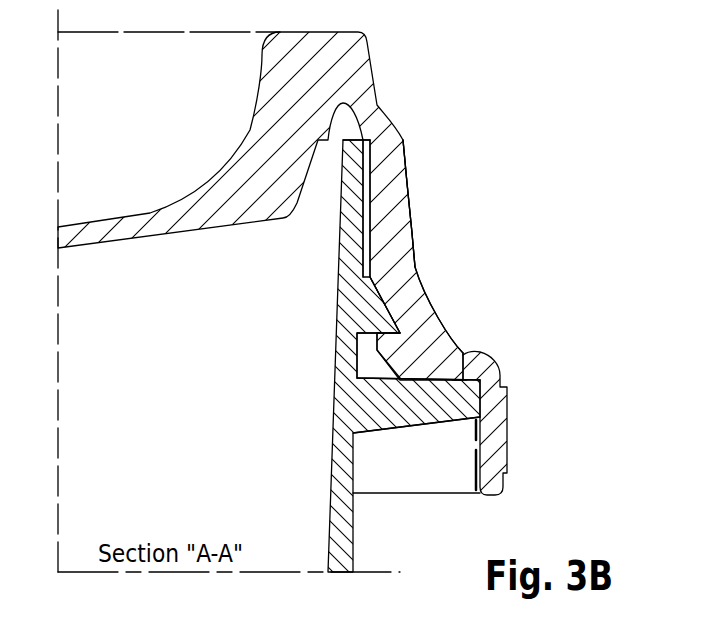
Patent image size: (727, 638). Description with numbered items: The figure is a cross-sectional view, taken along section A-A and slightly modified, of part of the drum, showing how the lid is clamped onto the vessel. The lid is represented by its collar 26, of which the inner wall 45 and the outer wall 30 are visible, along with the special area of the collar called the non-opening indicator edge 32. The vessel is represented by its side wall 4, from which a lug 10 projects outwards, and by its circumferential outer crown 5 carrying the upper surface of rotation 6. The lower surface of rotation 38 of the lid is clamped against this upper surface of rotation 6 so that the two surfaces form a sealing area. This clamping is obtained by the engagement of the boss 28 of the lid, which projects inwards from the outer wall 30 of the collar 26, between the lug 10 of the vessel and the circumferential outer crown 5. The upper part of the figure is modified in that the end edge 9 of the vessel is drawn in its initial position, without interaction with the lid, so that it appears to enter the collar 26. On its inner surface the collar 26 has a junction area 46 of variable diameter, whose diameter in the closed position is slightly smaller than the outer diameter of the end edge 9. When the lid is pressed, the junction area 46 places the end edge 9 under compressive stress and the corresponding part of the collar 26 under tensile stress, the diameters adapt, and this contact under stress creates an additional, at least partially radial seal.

The side wall 4 is at (340, 545).
The circumferential outer crown 5 is at (398, 418).
The upper surface of rotation 6 is at (440, 364).
The end edge 9 is at (355, 162).
The lug 10 is at (388, 293).
The collar 26 is at (427, 187).
The boss 28 is at (373, 351).
The outer wall 30 is at (385, 228).
The non-opening indicator edge 32 is at (510, 448).
The lower surface of rotation 38 is at (427, 383).
The inner wall 45 is at (290, 108).
The junction area 46 is at (367, 162).